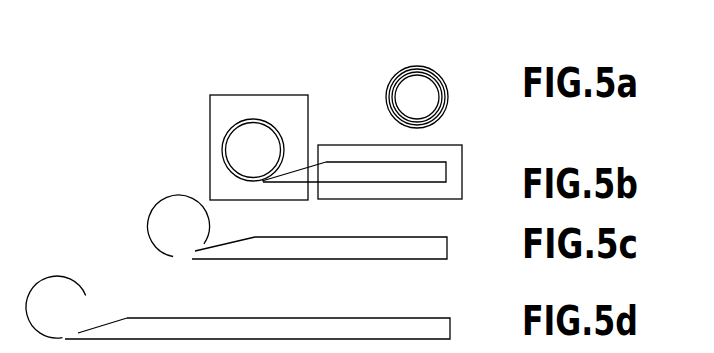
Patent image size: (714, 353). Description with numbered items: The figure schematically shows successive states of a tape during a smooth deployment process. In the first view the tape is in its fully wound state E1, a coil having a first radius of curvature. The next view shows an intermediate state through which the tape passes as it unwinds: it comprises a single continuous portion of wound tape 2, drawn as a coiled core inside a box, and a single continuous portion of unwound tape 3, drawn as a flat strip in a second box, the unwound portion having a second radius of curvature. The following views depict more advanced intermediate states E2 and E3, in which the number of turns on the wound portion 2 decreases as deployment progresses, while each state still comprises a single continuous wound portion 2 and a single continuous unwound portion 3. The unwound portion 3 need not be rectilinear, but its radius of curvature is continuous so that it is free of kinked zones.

In FIG. 5B, the wound portion of tape 2 is at (259, 95).
In FIG. 5B, the unwound portion of tape 3 is at (352, 143).
In FIG. 5A, the fully wound state E1 is at (441, 97).
In FIG. 5B, the fully wound state E1 is at (382, 183).
In FIG. 5C, the intermediate state E2 is at (324, 231).
In FIG. 5D, the intermediate state E3 is at (263, 310).